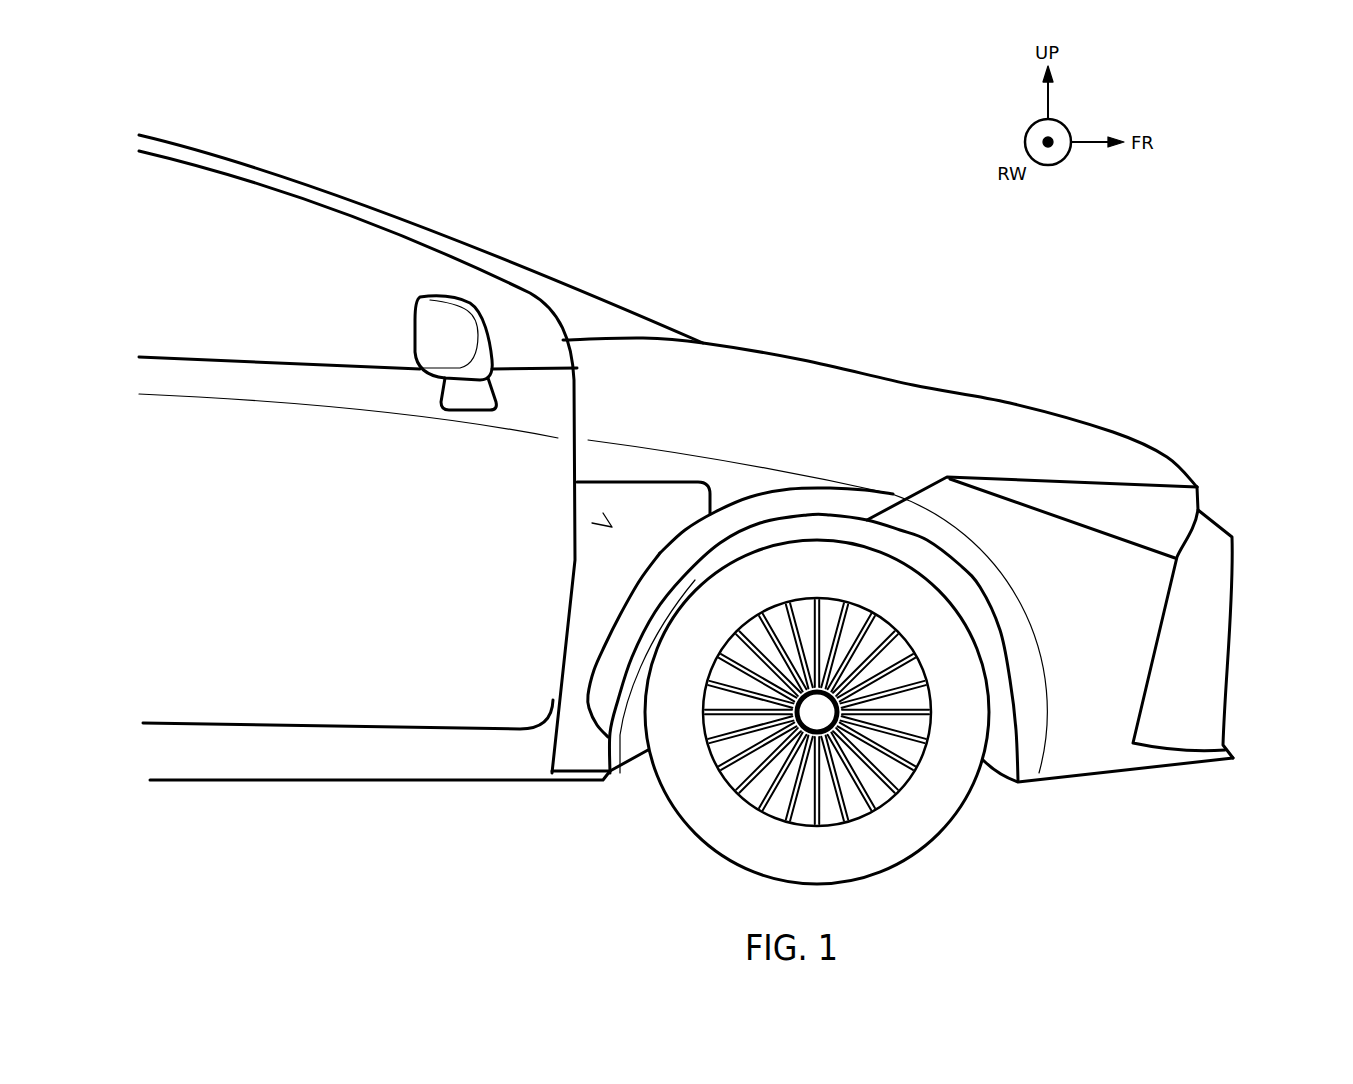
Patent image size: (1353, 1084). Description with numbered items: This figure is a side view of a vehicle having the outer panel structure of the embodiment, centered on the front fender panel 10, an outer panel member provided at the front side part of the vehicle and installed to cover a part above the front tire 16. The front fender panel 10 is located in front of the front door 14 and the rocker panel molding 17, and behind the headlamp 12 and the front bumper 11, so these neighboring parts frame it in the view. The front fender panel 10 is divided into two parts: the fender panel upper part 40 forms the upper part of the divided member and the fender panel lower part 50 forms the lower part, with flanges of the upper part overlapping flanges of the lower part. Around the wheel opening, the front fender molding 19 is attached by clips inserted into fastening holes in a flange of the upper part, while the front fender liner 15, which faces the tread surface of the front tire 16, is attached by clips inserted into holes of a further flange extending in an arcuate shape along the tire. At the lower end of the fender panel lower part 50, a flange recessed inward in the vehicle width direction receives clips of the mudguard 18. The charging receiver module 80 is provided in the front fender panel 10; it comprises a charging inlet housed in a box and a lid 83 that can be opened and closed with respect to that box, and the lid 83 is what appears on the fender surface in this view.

The front fender panel 10 is at (806, 358).
The front bumper 11 is at (1118, 753).
The headlamp 12 is at (1133, 505).
The front door 14 is at (223, 393).
The front fender liner 15 is at (1000, 753).
The front tire 16 is at (890, 838).
The rocker panel molding 17 is at (380, 758).
The mudguard 18 is at (591, 782).
The front fender molding 19 is at (780, 510).
The fender panel upper part 40 is at (915, 400).
The fender panel lower part 50 is at (582, 637).
The charging receiver module 80 is at (612, 527).
The lid 83 is at (653, 502).